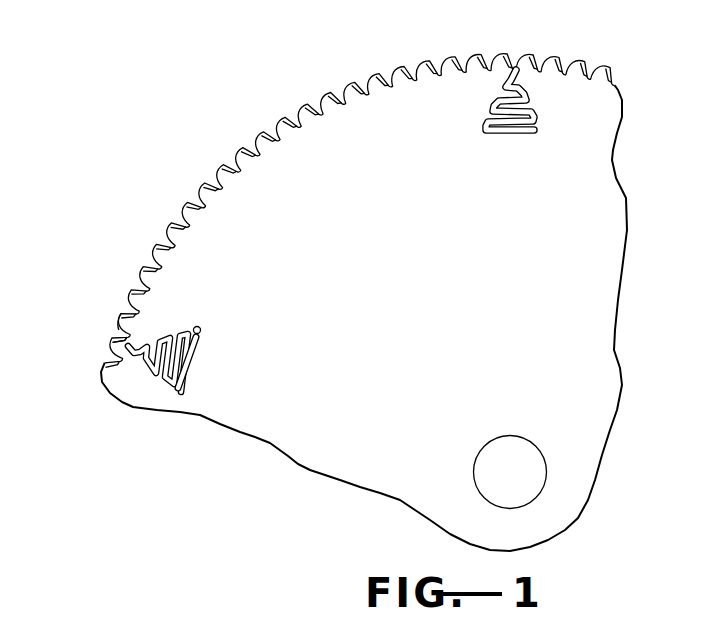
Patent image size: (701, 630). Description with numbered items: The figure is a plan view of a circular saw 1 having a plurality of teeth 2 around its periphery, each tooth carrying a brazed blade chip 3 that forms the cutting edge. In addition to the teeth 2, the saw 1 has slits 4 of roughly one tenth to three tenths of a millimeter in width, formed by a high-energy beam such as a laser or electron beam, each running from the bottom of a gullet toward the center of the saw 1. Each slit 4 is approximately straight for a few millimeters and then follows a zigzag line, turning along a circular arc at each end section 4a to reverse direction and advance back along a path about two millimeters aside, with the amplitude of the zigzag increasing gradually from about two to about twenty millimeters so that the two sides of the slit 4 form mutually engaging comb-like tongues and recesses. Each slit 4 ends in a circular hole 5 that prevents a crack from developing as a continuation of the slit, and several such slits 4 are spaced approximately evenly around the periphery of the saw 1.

The circular saw 1 is at (180, 288).
The teeth 2 is at (118, 328).
The blade chips 3 is at (118, 337).
The slits 4 is at (187, 367).
The end section 4a is at (166, 379).
The circular hole 5 is at (545, 130).